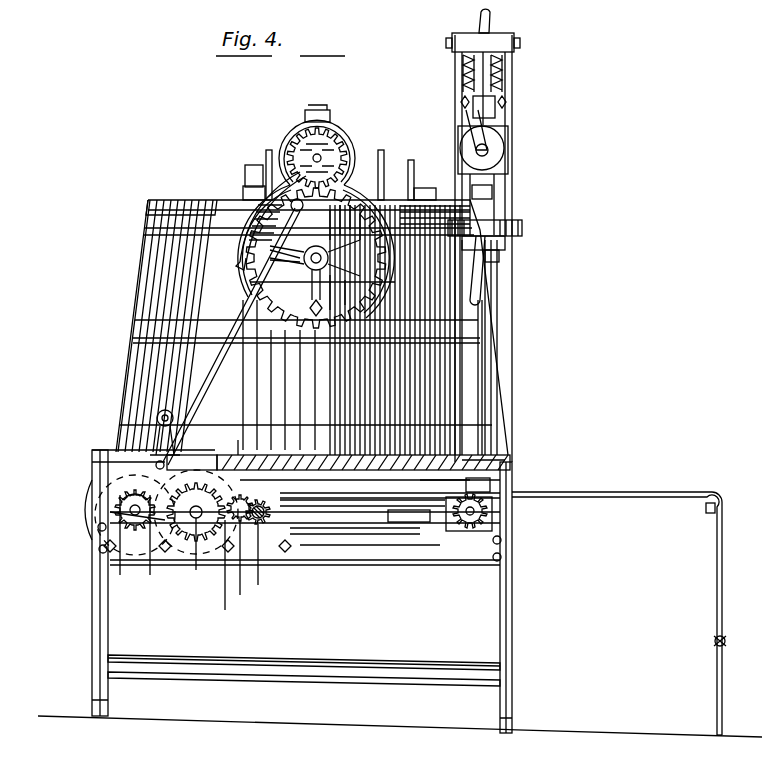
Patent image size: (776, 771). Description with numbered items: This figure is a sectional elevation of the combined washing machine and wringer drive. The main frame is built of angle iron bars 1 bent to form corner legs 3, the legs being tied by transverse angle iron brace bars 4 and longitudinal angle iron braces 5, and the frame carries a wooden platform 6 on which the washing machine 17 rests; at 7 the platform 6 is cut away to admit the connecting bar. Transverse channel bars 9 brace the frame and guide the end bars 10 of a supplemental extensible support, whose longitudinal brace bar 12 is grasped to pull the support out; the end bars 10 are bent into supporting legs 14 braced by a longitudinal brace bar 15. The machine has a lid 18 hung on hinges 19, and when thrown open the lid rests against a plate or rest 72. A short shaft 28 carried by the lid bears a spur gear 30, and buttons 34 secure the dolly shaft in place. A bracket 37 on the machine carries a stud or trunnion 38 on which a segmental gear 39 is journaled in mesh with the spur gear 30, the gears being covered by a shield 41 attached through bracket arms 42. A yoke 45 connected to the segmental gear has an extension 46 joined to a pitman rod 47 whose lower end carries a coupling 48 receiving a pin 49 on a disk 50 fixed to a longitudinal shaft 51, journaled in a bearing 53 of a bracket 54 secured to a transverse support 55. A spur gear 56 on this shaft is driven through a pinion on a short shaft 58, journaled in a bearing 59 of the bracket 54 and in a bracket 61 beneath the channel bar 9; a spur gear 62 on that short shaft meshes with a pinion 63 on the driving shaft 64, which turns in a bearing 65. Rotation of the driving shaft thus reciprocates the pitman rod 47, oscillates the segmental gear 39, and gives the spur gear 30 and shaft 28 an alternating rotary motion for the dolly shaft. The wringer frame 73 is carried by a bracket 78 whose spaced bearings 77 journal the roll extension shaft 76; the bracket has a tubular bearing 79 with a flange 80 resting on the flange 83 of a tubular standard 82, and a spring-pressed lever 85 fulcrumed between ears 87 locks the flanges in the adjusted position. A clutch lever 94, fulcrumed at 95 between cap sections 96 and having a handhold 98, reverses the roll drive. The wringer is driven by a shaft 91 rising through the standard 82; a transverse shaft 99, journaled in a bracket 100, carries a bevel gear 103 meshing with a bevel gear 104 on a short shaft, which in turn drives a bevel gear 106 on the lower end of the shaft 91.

The angle iron bars 1 is at (108, 618).
The corner legs 3 is at (92, 689).
The transverse angle iron brace bars 4 is at (288, 678).
The angle iron braces 5 is at (92, 651).
The platform 6 is at (281, 455).
The cut-away of platform 7 is at (194, 458).
The channel bars 9 is at (375, 530).
The end bars 10 is at (600, 492).
The longitudinal brace bar 12 is at (708, 514).
The supporting legs 14 is at (722, 558).
The longitudinal brace bar 15 is at (726, 641).
The washing machine 17 is at (140, 282).
The covers or lids 18 is at (150, 205).
The hinges 19 is at (243, 193).
The short shafts 28 is at (320, 158).
The spur gear 30 is at (350, 172).
The buttons 34 is at (318, 110).
The brackets 37 is at (302, 290).
The stud or trunnion 38 is at (270, 282).
The segmental gear 39 is at (384, 172).
The shields or guards 41 is at (300, 140).
The bracket arms 42 is at (245, 176).
The yoke 45 is at (240, 264).
The yoke extension 46 is at (258, 232).
The pitman bar or rod 47 is at (216, 372).
The coupling 48 is at (157, 420).
The pin 49 is at (156, 462).
The disk 50 is at (84, 505).
The longitudinally disposed shaft 51 is at (102, 523).
The bearing 53 is at (135, 518).
The bracket 54 is at (300, 540).
The transversely disposed support 55 is at (418, 558).
The spur gear 56 is at (150, 576).
The short shaft 58 is at (196, 570).
The bearing 59 is at (130, 497).
The bracket 61 is at (238, 440).
The spur gear 62 is at (220, 580).
The pinion 63 is at (241, 556).
The driving shaft 64 is at (264, 554).
The bearing 65 is at (370, 479).
The plates or rests 72 is at (266, 168).
The wringer frame support 73 is at (514, 45).
The extension shaft 76 is at (466, 148).
The spaced bearings 77 is at (492, 158).
The bracket 78 is at (496, 102).
The vertically disposed tubular bearing member 79 is at (494, 192).
The annular plate or flange 80 is at (522, 225).
The tubular support or standard 82 is at (482, 325).
The annular plate or flange 83 is at (505, 240).
The lever 85 is at (482, 290).
The ears 87 is at (499, 256).
The shaft 91 is at (437, 479).
The lever 94 is at (502, 70).
The fulcrum bolt 95 is at (512, 108).
The cap sections 96 is at (504, 147).
The handhold 98 is at (492, 14).
The transversely disposed shaft 99 is at (330, 535).
The bracket 100 is at (416, 550).
The bevel gear 103 is at (501, 540).
The bevel gear 104 is at (490, 512).
The bevel gear 106 is at (500, 480).